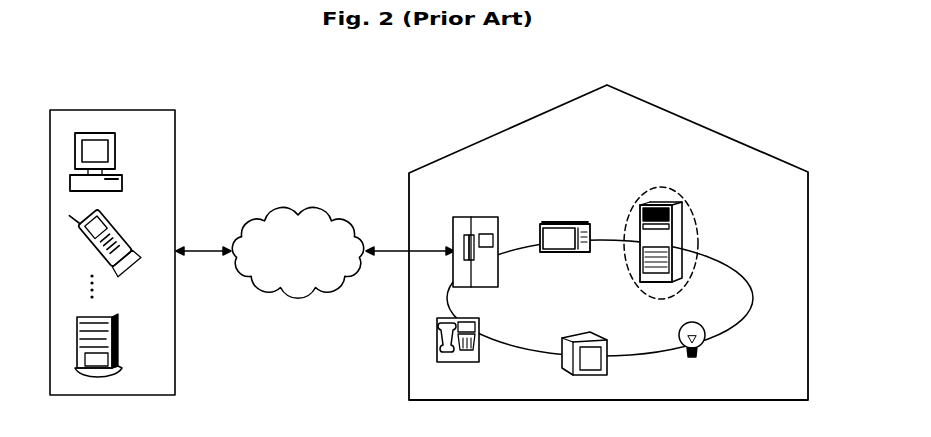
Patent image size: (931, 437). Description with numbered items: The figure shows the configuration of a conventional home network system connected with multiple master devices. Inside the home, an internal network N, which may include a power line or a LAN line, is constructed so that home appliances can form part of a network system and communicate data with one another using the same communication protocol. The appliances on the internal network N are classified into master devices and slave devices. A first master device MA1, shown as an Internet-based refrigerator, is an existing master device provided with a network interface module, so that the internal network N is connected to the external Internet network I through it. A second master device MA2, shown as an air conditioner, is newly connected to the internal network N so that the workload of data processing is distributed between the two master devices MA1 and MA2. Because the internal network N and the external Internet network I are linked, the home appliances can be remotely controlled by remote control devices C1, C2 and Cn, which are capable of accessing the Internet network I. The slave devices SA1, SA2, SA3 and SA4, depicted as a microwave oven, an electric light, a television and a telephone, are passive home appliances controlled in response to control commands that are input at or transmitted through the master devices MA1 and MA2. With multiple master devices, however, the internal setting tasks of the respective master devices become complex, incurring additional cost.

The remote control device C1 is at (113, 150).
The remote control device C2 is at (118, 232).
The remote control device Cn is at (118, 342).
The external Internet network I is at (298, 213).
The internal network N is at (733, 273).
The first master device MA1 is at (482, 217).
The second master device MA2 is at (655, 205).
The slave device SA1 is at (565, 222).
The slave device SA2 is at (705, 340).
The slave device SA3 is at (607, 362).
The slave device SA4 is at (479, 355).